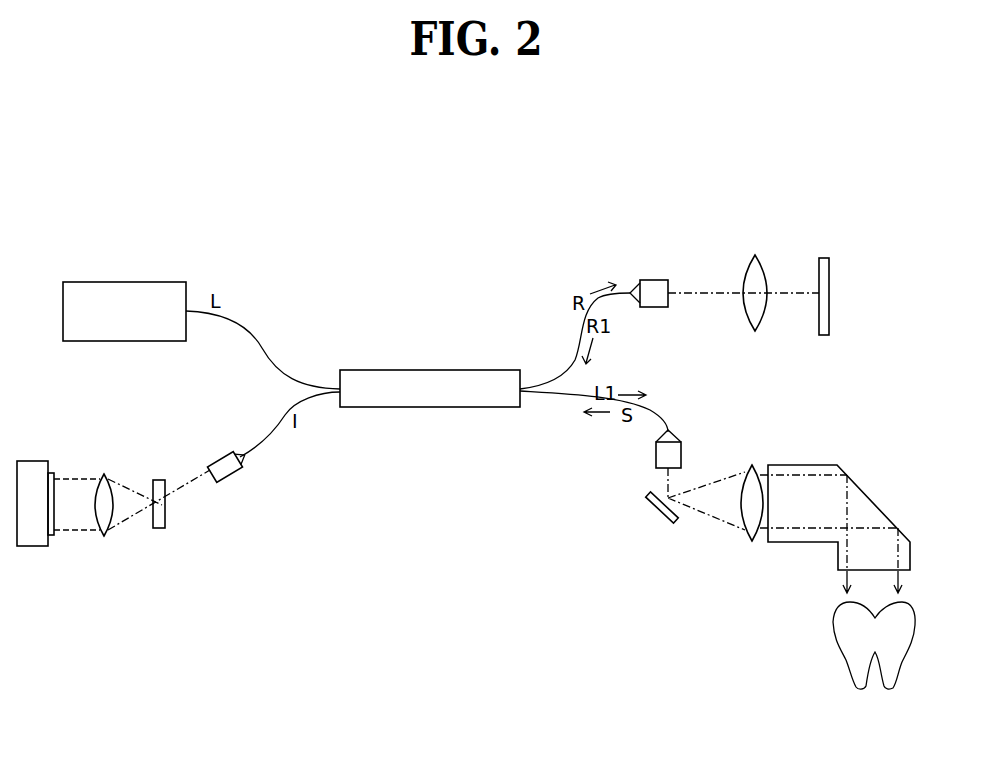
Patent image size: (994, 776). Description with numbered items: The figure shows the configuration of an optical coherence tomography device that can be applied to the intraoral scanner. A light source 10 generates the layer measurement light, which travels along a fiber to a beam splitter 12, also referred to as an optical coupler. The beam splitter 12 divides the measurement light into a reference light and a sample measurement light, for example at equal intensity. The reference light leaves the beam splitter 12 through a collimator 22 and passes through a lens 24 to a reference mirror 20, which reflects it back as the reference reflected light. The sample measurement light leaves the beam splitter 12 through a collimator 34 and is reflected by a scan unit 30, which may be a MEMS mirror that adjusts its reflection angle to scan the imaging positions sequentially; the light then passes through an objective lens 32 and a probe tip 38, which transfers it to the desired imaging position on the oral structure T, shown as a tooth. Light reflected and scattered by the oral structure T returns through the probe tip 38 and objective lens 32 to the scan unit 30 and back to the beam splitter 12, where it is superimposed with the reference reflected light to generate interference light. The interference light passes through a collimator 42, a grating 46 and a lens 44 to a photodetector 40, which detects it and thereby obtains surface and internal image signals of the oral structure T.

The light source 10 is at (127, 282).
The beam splitter 12 is at (413, 370).
The reference mirror 20 is at (828, 258).
The collimator 22 is at (656, 280).
The lens 24 is at (753, 256).
The scan unit 30 is at (655, 512).
The objective lens 32 is at (752, 465).
The collimator 34 is at (656, 456).
The probe tip 38 is at (880, 506).
The photodetector 40 is at (35, 461).
The collimator 42 is at (232, 482).
The lens 44 is at (107, 474).
The grating 46 is at (157, 480).
The oral structure T is at (838, 641).